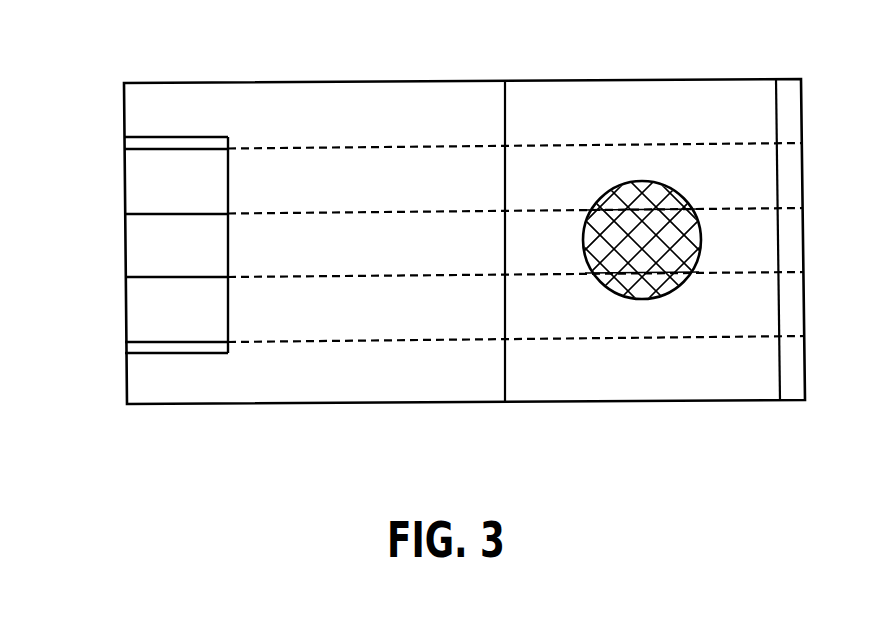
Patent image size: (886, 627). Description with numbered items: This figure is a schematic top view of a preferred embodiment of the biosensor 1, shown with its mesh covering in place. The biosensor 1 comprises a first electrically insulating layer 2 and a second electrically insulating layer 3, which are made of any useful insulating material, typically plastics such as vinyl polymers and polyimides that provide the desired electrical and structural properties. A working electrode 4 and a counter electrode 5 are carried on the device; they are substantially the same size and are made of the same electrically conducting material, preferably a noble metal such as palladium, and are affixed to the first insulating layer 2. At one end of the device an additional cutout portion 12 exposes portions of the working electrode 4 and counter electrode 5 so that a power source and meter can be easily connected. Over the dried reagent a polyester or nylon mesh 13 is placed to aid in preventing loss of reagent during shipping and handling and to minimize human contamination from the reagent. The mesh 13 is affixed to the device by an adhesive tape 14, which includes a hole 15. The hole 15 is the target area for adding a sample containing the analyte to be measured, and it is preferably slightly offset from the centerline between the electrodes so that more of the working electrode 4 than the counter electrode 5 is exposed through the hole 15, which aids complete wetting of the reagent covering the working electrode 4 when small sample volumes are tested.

The biosensor 1 is at (820, 237).
The first electrically insulating layer 2 is at (153, 246).
The second electrically insulating layer 3 is at (257, 390).
The working electrode 4 is at (138, 290).
The counter electrode 5 is at (137, 164).
The additional cutout portion 12 is at (150, 355).
The mesh 13 is at (628, 255).
The adhesive tape 14 is at (697, 115).
The hole 15 is at (620, 180).